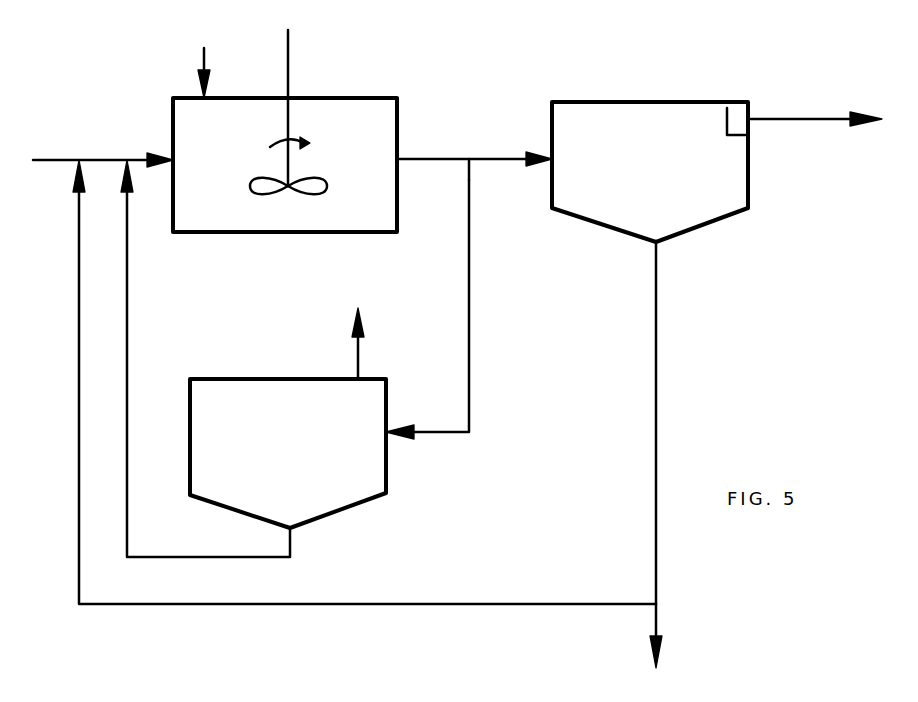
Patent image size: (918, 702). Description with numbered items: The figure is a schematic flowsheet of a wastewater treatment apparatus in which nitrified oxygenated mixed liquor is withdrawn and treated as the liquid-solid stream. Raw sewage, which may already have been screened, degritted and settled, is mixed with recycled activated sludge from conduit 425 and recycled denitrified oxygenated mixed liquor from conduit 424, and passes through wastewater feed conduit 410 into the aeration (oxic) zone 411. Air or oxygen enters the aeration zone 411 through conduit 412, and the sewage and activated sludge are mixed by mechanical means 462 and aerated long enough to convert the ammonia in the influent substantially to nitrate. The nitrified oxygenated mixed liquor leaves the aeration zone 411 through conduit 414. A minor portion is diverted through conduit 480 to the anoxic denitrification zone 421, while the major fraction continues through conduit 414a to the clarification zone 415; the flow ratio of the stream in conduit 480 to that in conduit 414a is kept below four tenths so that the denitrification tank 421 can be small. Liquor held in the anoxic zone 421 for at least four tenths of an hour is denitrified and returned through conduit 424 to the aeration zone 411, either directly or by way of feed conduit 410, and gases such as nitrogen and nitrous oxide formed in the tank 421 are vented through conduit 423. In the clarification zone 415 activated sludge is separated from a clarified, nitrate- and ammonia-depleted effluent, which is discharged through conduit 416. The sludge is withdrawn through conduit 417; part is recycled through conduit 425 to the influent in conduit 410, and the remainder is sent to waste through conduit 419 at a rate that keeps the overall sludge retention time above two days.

The wastewater feed conduit 410 is at (56, 160).
The aeration (oxic) zone 411 is at (391, 97).
The conduit 412 is at (206, 55).
The conduit 414 is at (442, 158).
The conduit 414a is at (493, 160).
The clarification zone 415 is at (748, 180).
The conduit 416 is at (796, 117).
The conduit 417 is at (657, 383).
The conduit 419 is at (657, 625).
The anoxic denitrification zone 421 is at (387, 391).
The conduit 423 is at (356, 347).
The conduit 424 is at (127, 282).
The conduit 425 is at (521, 600).
The mechanical means 462 is at (263, 195).
The conduit 480 is at (469, 404).